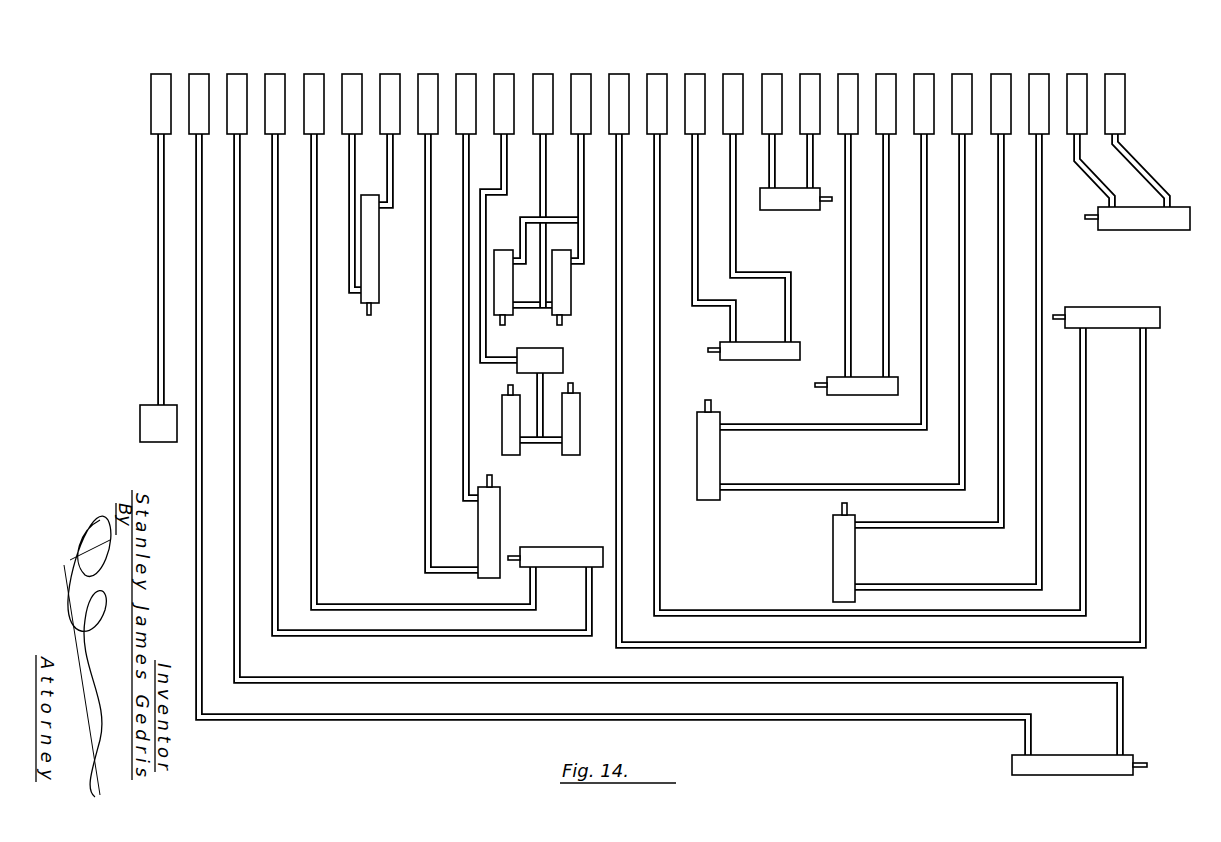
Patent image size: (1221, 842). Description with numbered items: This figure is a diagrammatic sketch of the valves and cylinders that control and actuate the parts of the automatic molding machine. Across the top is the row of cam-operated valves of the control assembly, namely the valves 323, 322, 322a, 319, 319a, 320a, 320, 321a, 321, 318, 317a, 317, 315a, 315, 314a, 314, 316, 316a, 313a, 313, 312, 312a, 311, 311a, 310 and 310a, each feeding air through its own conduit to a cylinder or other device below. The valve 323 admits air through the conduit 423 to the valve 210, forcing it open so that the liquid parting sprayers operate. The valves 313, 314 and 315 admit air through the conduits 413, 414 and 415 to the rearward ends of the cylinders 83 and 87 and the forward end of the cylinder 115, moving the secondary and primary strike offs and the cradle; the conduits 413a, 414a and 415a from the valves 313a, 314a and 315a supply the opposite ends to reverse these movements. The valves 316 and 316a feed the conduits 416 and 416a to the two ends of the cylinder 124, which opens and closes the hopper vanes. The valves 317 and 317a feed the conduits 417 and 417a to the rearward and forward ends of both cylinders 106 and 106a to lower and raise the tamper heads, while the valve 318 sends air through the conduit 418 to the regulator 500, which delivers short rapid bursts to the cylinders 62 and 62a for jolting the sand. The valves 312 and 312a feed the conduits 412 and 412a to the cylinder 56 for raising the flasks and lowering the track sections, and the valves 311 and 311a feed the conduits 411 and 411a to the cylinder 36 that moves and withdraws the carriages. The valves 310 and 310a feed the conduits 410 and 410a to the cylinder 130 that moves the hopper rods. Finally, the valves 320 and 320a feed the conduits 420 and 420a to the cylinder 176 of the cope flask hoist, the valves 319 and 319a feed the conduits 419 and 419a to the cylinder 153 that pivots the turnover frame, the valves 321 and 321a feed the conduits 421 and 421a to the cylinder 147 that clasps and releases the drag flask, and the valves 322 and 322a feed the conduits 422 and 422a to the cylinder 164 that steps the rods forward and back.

The valve 323 is at (162, 80).
The valve 322 is at (200, 80).
The valve 322a is at (239, 82).
The valve 319 is at (275, 80).
The valve 319a is at (313, 82).
The valve 320a is at (352, 80).
The valve 320 is at (392, 80).
The valve 321a is at (428, 80).
The valve 321 is at (469, 82).
The valve 318 is at (507, 80).
The valve 317a is at (543, 82).
The valve 317 is at (580, 80).
The valve 315a is at (622, 82).
The valve 315 is at (658, 80).
The valve 314a is at (695, 82).
The valve 314 is at (730, 80).
The valve 316 is at (777, 82).
The valve 316a is at (808, 80).
The valve 313a is at (850, 82).
The valve 313 is at (885, 80).
The valve 312 is at (925, 82).
The valve 312a is at (962, 80).
The valve 311 is at (1005, 82).
The valve 311a is at (1040, 80).
The valve 310 is at (1080, 82).
The valve 310a is at (1117, 80).
The conduit 423 is at (160, 313).
The conduit 422 is at (199, 192).
The conduit 422a is at (233, 655).
The conduit 419 is at (271, 315).
The conduit 419a is at (310, 573).
The conduit 420a is at (348, 272).
The conduit 420 is at (388, 150).
The conduit 421a is at (422, 507).
The conduit 421 is at (463, 487).
The conduit 418 is at (492, 361).
The conduit 417a is at (538, 183).
The conduit 417 is at (583, 168).
The conduit 415a is at (621, 612).
The conduit 415 is at (658, 560).
The conduit 414a is at (692, 283).
The conduit 414 is at (730, 250).
The conduit 416 is at (771, 170).
The conduit 416a is at (808, 150).
The conduit 413a is at (843, 250).
The conduit 413 is at (880, 250).
The conduit 412 is at (927, 400).
The conduit 412a is at (957, 443).
The conduit 411 is at (996, 478).
The conduit 411a is at (1021, 538).
The conduit 410 is at (1092, 170).
The conduit 410a is at (1156, 182).
The valve 210 is at (147, 422).
The cylinder 176 is at (374, 265).
The cylinder 106 is at (508, 254).
The cylinder 106a is at (565, 293).
The regulator 500 is at (540, 352).
The cylinder 62 is at (512, 448).
The cylinder 62a is at (570, 448).
The cylinder 147 is at (493, 516).
The cylinder 153 is at (540, 552).
The cylinder 87 is at (755, 353).
The cylinder 124 is at (778, 205).
The cylinder 83 is at (872, 388).
The cylinder 56 is at (722, 455).
The cylinder 36 is at (838, 552).
The cylinder 115 is at (1123, 310).
The cylinder 130 is at (1154, 222).
The cylinder 164 is at (1070, 769).